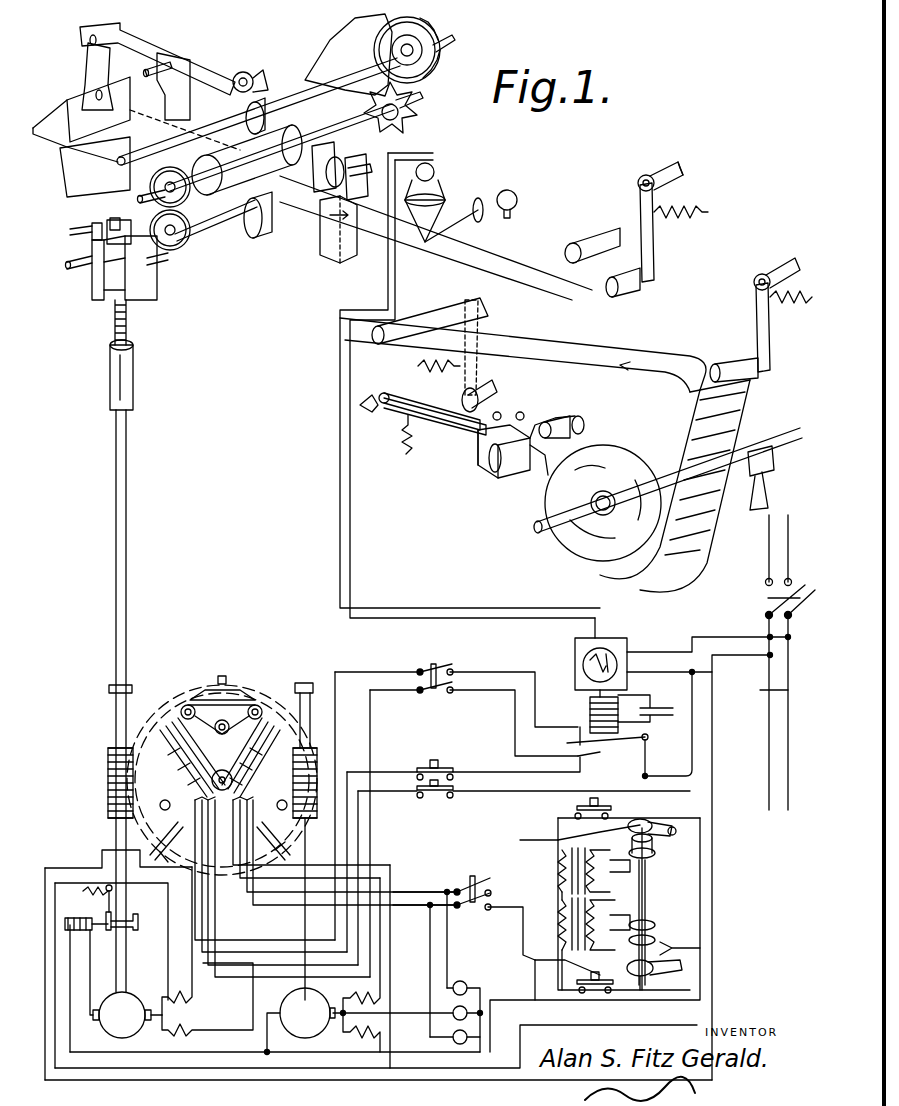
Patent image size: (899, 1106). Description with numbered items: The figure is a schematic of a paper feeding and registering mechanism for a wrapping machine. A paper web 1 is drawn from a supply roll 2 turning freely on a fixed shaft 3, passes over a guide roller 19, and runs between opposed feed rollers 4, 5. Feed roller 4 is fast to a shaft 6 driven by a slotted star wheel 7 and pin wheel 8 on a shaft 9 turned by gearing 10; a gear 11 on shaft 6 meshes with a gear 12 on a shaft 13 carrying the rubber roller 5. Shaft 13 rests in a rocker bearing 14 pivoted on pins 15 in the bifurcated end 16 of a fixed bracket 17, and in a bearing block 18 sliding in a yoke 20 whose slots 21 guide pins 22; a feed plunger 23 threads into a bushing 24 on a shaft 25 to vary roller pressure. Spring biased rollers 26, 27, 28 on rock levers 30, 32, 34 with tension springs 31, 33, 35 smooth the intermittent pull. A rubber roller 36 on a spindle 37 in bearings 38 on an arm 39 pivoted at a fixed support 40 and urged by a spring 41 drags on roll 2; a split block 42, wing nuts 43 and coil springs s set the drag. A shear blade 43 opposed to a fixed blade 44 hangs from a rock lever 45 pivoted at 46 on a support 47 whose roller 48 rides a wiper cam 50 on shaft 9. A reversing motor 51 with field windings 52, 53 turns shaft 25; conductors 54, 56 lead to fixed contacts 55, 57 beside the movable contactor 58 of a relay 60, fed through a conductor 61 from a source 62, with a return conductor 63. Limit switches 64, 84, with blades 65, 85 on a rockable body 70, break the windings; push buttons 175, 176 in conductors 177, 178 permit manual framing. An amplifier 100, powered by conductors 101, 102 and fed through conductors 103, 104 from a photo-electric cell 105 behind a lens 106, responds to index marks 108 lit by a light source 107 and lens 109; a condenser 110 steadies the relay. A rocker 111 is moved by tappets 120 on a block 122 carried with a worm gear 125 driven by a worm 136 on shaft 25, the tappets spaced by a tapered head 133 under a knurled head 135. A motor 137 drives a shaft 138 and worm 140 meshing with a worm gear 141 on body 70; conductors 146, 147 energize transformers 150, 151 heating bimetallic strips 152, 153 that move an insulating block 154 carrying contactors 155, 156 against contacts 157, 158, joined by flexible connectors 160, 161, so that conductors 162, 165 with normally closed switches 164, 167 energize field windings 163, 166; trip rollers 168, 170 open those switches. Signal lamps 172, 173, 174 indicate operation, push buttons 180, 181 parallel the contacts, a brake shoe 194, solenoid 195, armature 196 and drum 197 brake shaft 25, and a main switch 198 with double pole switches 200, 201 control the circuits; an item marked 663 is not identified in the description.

The paper web 1 is at (598, 356).
The supply roll 2 is at (603, 503).
The fixed shaft 3 is at (548, 522).
The feed roller 4 is at (247, 160).
The feed roller 5 is at (254, 214).
The rotatable shaft 6 is at (335, 138).
The slotted star wheel 7 is at (420, 118).
The pin or driving wheel 8 is at (378, 45).
The shaft 9 is at (292, 102).
The gearing 10 is at (415, 35).
The gear 11 is at (152, 182).
The gear 12 is at (190, 228).
The shaft 13 is at (226, 218).
The rocker bearing 14 is at (346, 156).
The pins 15 is at (359, 178).
The bifurcated end 16 is at (400, 150).
The fixed bracket 17 is at (322, 242).
The bearing block 18 is at (125, 225).
The guide roller 19 is at (560, 240).
The bifurcated yoke 20 is at (160, 290).
The alined slots 21 is at (100, 226).
The guide pins 22 is at (80, 256).
The feed plunger 23 is at (95, 275).
The bushing 24 is at (100, 378).
The shaft 25 is at (115, 456).
The spring biased roller 26 is at (745, 372).
The spring biased roller 27 is at (420, 330).
The spring biased roller 28 is at (632, 292).
The rock lever 30 is at (752, 310).
The tension spring 31 is at (791, 310).
The rock lever 32 is at (457, 356).
The tension spring 33 is at (423, 365).
The rock lever 34 is at (652, 235).
The tension spring 35 is at (690, 208).
The rubber roller 36 is at (583, 420).
The spindle 37 is at (536, 425).
The bearings 38 is at (537, 470).
The arm 39 is at (455, 416).
The fixed support 40 is at (417, 416).
The spring 41 is at (386, 439).
The split block 42 is at (475, 462).
The shear blade 43 is at (78, 100).
The fixed blade 44 is at (110, 162).
The rock lever 45 is at (132, 50).
The pivot 46 is at (200, 58).
The support 47 is at (170, 108).
The roller 48 is at (248, 72).
The wiper cam 50 is at (242, 112).
The electric motor 51 is at (126, 984).
The field winding 52 is at (207, 1006).
The field winding 53 is at (174, 941).
The conductor 54 is at (330, 688).
The fixed contact 55 is at (568, 740).
The conductor 56 is at (490, 692).
The fixed contact 57 is at (580, 770).
The movable contactor 58 is at (622, 757).
The control relay 60 is at (590, 715).
The conductor 61 is at (740, 636).
The source of current 62 is at (758, 683).
The conductor 63 is at (705, 900).
The limit switch 64 is at (221, 729).
The spring blade 65 is at (300, 740).
The rockable body 70 is at (224, 778).
The limit switch 84 is at (220, 757).
The spring blade 85 is at (150, 730).
The amplifier 100 is at (610, 640).
The conductor 101 is at (709, 643).
The conductor 102 is at (700, 665).
The conductor 103 is at (472, 606).
The conductor 104 is at (340, 480).
The photo-electric cell 105 is at (437, 172).
The lens 106 is at (447, 196).
The light source 107 is at (515, 200).
The index marks 108 is at (680, 480).
The lens 109 is at (490, 205).
The condenser 110 is at (672, 712).
The rocker 111 is at (260, 705).
The tappet 120 is at (248, 700).
The block 122 is at (195, 700).
The worm gear 125 is at (270, 700).
The tapered head 133 is at (212, 692).
The knurled head 135 is at (225, 680).
The worm 136 is at (108, 780).
The motor 137 is at (300, 1021).
The shaft 138 is at (290, 843).
The worm 140 is at (312, 790).
The worm gear 141 is at (305, 760).
The conductor 146 is at (408, 905).
The conductor 147 is at (235, 912).
The transformer 150 is at (568, 870).
The transformer 151 is at (579, 935).
The bimetallic strip 152 is at (650, 858).
The bimetallic strip 153 is at (648, 920).
The insulating block 154 is at (648, 885).
The contactor 155 is at (635, 830).
The contactor 156 is at (685, 963).
The contact 157 is at (680, 840).
The contact 158 is at (665, 950).
The flexible connector 160 is at (560, 826).
The flexible connector 161 is at (565, 962).
The conductor 162 is at (275, 1070).
The field winding 163 is at (362, 1022).
The normally closed switch 164 is at (150, 840).
The conductor 165 is at (435, 1068).
The field winding 166 is at (363, 945).
The normally closed switch 167 is at (280, 835).
The trip roller 168 is at (178, 815).
The trip roller 170 is at (282, 815).
The signal lamp 172 is at (467, 984).
The signal lamp 173 is at (453, 1036).
The signal lamp 174 is at (453, 1012).
The push button 175 is at (440, 765).
The push button 176 is at (438, 798).
The conductor 177 is at (488, 768).
The conductor 178 is at (225, 983).
The push button 180 is at (571, 802).
The push button 181 is at (598, 996).
The brake shoe 194 is at (143, 928).
The solenoid 195 is at (70, 918).
The spring actuated armature 196 is at (87, 908).
The drum 197 is at (143, 910).
The main switch 198 is at (770, 598).
The double pole switch 200 is at (422, 669).
The double pole switch 201 is at (494, 911).
The spring 663 is at (128, 886).
The coil springs s is at (481, 470).